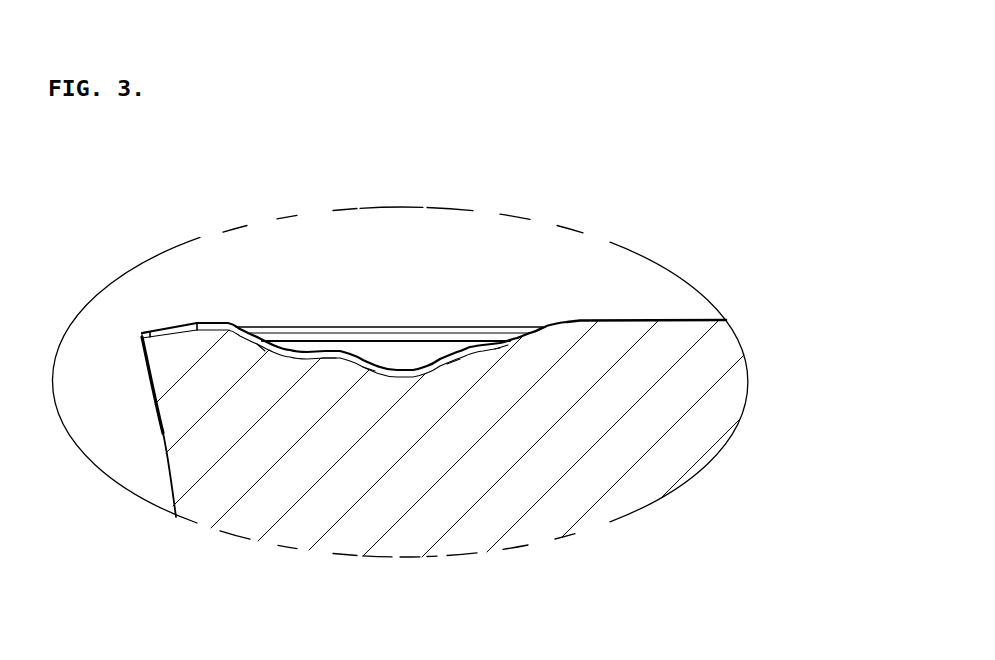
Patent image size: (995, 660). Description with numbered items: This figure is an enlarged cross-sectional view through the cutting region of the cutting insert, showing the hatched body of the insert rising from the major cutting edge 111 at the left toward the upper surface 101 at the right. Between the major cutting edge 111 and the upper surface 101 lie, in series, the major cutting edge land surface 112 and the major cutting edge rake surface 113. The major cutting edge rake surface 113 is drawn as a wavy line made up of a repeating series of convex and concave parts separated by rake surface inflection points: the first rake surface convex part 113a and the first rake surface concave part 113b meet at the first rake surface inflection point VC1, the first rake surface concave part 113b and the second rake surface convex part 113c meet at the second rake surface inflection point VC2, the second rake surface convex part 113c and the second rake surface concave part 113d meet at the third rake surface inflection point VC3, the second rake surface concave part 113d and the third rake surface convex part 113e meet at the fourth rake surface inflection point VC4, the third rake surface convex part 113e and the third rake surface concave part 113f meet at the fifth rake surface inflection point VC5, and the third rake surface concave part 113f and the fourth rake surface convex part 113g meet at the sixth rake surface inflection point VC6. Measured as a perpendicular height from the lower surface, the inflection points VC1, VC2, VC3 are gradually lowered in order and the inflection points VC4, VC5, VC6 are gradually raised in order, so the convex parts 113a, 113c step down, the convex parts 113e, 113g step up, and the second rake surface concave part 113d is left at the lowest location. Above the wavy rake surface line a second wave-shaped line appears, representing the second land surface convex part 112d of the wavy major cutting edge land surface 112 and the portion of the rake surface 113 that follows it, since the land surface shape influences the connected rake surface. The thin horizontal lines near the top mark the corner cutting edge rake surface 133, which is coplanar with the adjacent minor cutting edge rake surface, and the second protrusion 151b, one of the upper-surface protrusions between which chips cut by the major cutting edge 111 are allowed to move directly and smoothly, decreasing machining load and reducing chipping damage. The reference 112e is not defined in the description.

The upper surface 101 is at (658, 320).
The major cutting edge 111 is at (141, 336).
The major cutting edge land surface 112 is at (173, 328).
The second land surface convex part 112d is at (189, 328).
The end portion of first layer 112e is at (153, 333).
The major cutting edge rake surface 113 is at (598, 168).
The first rake surface convex part 113a is at (237, 325).
The first rake surface concave part 113b is at (301, 350).
The second rake surface convex part 113c is at (351, 352).
The second rake surface concave part 113d is at (406, 367).
The third rake surface convex part 113e is at (469, 346).
The third rake surface concave part 113f is at (524, 335).
The fourth rake surface convex part 113g is at (557, 323).
The corner cutting edge rake surface 133 is at (388, 328).
The second protrusion 151b is at (426, 336).
The first rake surface inflection point VC1 is at (263, 352).
The second rake surface inflection point VC2 is at (330, 358).
The third rake surface inflection point VC3 is at (371, 364).
The fourth rake surface inflection point VC4 is at (454, 360).
The fifth rake surface inflection point VC5 is at (500, 348).
The sixth rake surface inflection point VC6 is at (540, 333).